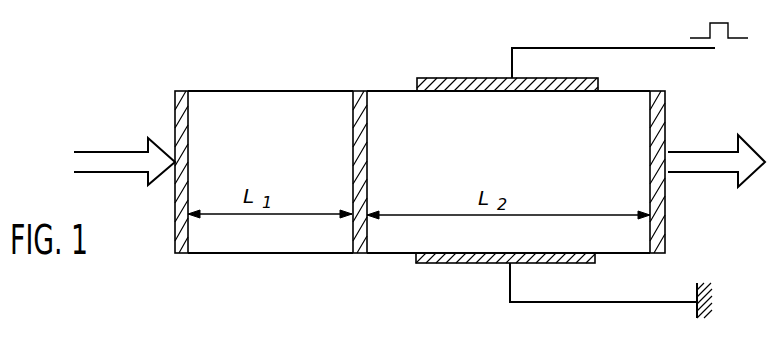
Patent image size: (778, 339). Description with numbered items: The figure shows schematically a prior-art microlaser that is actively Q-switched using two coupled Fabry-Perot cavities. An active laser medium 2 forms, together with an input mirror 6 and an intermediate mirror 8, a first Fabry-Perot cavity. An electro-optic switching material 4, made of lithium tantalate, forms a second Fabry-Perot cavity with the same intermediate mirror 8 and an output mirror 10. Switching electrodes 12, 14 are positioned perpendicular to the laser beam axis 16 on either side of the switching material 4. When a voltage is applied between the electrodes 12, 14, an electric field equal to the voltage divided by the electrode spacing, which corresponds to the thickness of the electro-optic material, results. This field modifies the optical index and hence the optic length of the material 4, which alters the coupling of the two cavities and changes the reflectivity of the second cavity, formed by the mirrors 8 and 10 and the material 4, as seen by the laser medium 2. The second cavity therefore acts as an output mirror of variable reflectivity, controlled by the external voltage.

The active laser medium 2 is at (258, 105).
The electro-optic switching material 4 is at (385, 251).
The input mirror 6 is at (181, 91).
The intermediate mirror 8 is at (360, 91).
The output mirror 10 is at (667, 130).
The switching electrode 12 is at (455, 263).
The switching electrode 14 is at (470, 81).
The laser beam axis 16 is at (710, 165).